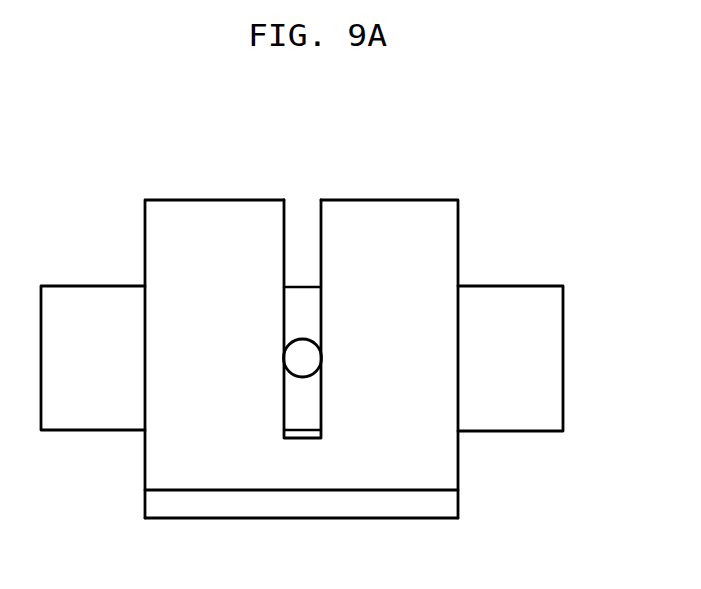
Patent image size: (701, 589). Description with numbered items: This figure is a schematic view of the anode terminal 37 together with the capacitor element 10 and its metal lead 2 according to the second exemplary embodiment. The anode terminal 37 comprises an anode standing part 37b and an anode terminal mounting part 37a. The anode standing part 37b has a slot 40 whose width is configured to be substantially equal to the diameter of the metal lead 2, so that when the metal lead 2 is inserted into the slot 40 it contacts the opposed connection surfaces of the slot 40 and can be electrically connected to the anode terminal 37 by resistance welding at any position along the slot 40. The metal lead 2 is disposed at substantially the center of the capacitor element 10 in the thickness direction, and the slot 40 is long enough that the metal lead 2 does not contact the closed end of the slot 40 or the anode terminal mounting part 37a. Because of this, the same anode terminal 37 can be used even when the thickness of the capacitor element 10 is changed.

The slot 40 is at (301, 207).
The metal lead 2 is at (308, 356).
The capacitor element 10 is at (542, 355).
The anode standing part 37b is at (448, 458).
The anode terminal mounting part 37a is at (448, 510).
The anode terminal 37 is at (571, 460).